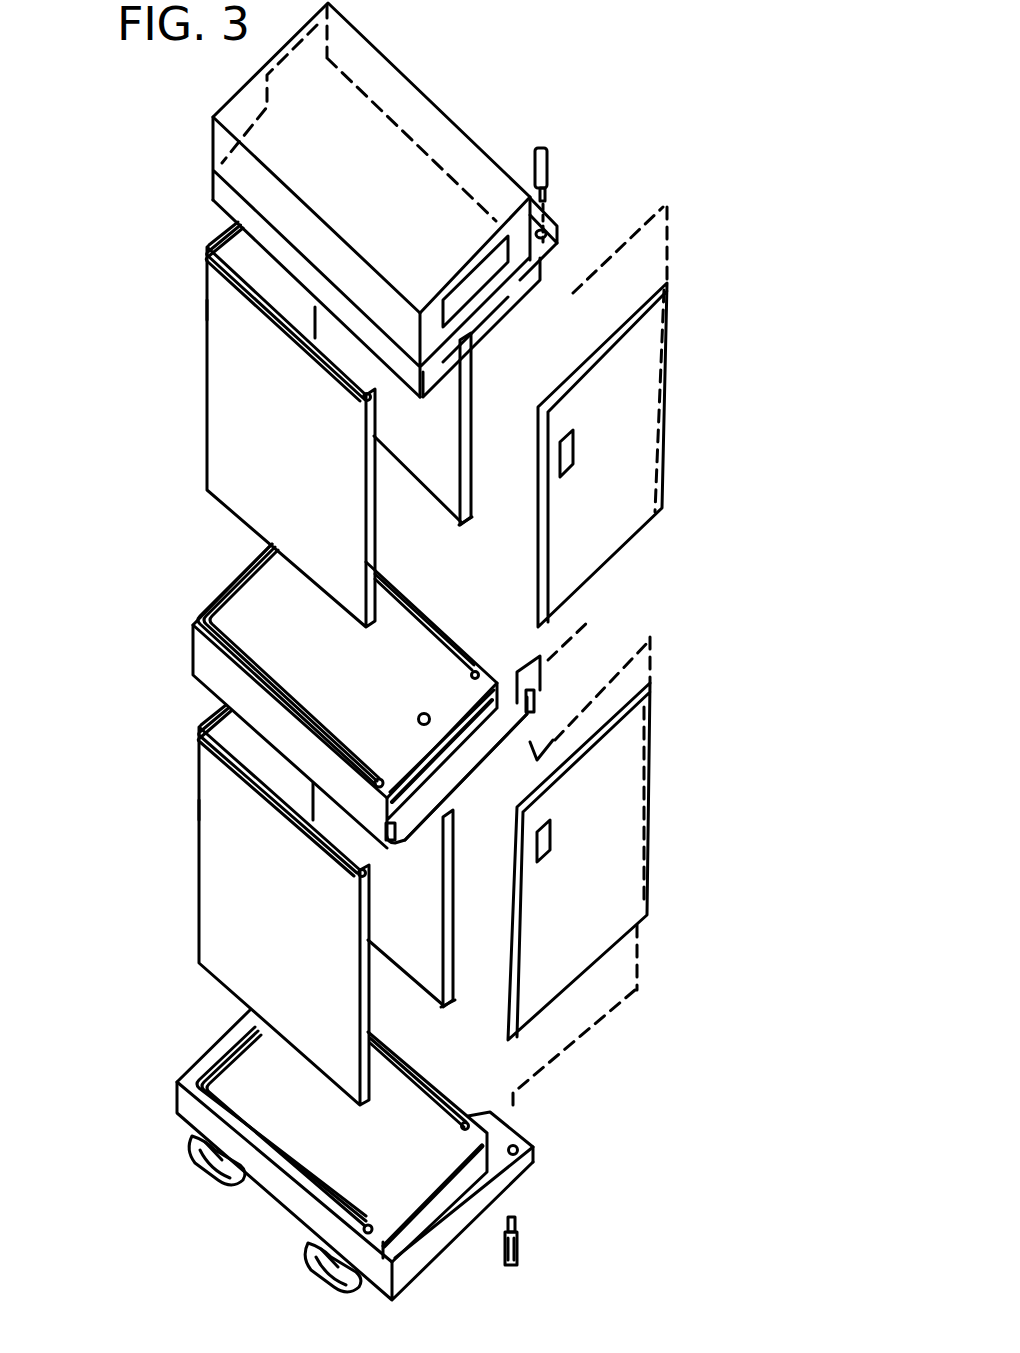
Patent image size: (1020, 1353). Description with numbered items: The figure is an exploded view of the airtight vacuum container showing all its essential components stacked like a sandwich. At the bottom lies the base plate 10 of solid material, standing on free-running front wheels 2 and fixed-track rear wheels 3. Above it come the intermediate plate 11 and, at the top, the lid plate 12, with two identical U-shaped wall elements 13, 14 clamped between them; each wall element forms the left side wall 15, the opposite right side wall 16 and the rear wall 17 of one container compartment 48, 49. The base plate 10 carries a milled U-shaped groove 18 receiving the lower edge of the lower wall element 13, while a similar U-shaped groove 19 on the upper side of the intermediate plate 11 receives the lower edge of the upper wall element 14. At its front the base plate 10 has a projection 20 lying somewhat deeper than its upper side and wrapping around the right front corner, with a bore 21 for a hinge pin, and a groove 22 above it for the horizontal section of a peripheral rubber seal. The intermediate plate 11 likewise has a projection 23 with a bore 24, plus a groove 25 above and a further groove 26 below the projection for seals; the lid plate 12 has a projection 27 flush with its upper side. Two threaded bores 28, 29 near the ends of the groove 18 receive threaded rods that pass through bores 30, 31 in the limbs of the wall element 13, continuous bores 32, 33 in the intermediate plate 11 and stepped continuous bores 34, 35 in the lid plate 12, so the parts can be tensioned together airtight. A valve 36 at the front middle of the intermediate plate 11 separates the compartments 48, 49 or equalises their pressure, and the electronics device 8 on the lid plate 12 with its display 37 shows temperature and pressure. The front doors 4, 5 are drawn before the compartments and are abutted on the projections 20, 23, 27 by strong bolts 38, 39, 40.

The front wheels 2 is at (308, 1262).
The rear wheels 3 is at (212, 1190).
The front door 4 is at (660, 422).
The front door 5 is at (655, 824).
The device with electronics 8 is at (432, 130).
The base plate 10 is at (265, 1095).
The intermediate plate 11 is at (270, 634).
The lid plate 12 is at (213, 200).
The wall element 13 is at (231, 890).
The wall element 14 is at (228, 384).
The left side wall 15 is at (240, 323).
The right side wall 16 is at (472, 433).
The rear wall 17 is at (233, 230).
The U-shaped groove 18 is at (235, 1043).
The U-shaped groove 19 is at (240, 592).
The projection 20 is at (525, 1165).
The bore 21 is at (518, 1149).
The groove 22 is at (446, 1195).
The projection 23 is at (483, 760).
The bore 24 is at (540, 692).
The groove 25 is at (428, 785).
The groove 26 is at (393, 840).
The projection 27 is at (488, 314).
The threaded bore 28 is at (368, 1225).
The threaded bore 29 is at (460, 1128).
The bore 30 is at (363, 398).
The bore 31 is at (462, 528).
The continuous bore 32 is at (379, 779).
The continuous bore 33 is at (471, 676).
The continuous bore 34 is at (418, 401).
The continuous bore 35 is at (549, 242).
The valve 36 is at (422, 715).
The display 37 is at (556, 290).
The bolt 38 is at (518, 1246).
The bolt 39 is at (534, 667).
The bolt 40 is at (549, 164).
The container compartment 48 is at (189, 488).
The container compartment 49 is at (182, 984).